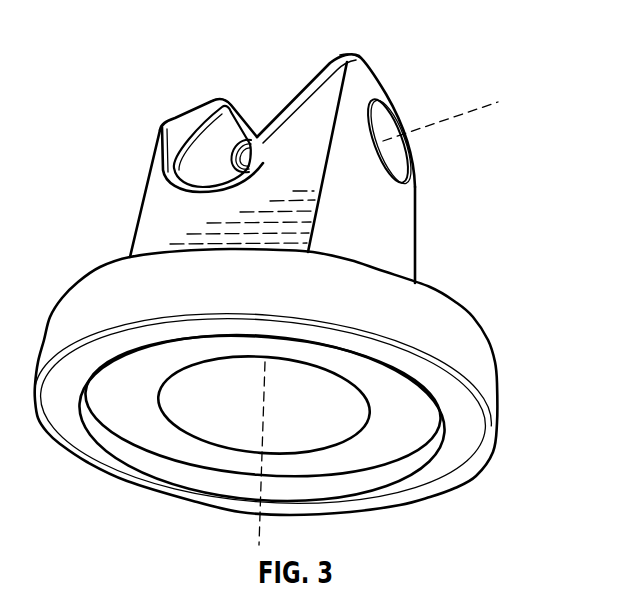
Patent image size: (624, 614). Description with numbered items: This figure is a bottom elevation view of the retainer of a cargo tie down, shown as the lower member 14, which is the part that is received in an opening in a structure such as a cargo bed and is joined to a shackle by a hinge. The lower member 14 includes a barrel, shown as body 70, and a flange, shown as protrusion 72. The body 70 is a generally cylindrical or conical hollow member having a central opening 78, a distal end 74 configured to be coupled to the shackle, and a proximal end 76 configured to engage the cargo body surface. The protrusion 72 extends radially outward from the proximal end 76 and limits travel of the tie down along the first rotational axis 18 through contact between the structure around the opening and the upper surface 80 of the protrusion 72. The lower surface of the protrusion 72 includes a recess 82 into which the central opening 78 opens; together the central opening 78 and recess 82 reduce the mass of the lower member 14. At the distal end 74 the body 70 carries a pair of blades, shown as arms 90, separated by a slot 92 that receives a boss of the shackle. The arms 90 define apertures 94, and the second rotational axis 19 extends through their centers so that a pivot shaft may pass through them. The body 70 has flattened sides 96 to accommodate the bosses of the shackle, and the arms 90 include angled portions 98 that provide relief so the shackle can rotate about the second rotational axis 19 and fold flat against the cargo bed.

The lower member 14 is at (484, 21).
The first rotational axis 18 is at (263, 518).
The second rotational axis 19 is at (474, 110).
The body 70 is at (153, 207).
The protrusion 72 is at (478, 367).
The distal end 74 is at (443, 171).
The proximal end 76 is at (460, 276).
The central opening 78 is at (228, 409).
The upper surface 80 is at (477, 317).
The recess 82 is at (399, 444).
The arms 90 is at (217, 130).
The slot 92 is at (264, 105).
The apertures 94 is at (388, 165).
The flattened sides 96 is at (401, 220).
The angled portions 98 is at (175, 133).